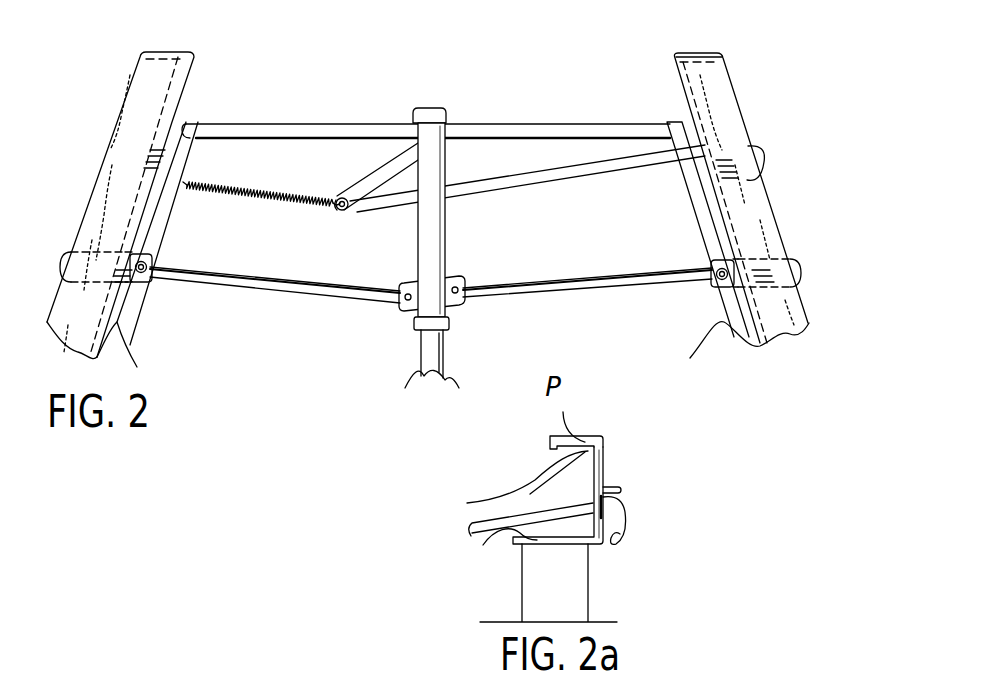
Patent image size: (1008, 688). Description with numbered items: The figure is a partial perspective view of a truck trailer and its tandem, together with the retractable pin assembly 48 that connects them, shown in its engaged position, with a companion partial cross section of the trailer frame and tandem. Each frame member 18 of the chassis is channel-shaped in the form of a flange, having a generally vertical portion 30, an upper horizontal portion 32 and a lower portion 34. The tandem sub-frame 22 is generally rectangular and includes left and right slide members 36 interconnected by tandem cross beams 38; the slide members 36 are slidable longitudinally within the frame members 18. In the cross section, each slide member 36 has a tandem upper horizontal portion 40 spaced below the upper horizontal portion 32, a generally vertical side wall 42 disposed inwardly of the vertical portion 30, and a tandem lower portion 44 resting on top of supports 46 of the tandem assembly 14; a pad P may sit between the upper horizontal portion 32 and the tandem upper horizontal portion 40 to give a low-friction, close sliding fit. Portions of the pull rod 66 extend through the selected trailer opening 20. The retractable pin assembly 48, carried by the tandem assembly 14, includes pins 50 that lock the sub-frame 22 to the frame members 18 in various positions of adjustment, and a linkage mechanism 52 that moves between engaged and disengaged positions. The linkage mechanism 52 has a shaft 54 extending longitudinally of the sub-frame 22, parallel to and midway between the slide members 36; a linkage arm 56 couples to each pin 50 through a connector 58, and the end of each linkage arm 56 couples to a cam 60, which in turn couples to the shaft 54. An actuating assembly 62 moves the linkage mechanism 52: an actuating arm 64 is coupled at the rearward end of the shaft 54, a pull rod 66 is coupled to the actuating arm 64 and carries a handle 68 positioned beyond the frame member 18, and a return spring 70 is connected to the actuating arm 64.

In FIG. 2, the tandem assembly 14 is at (211, 298).
In FIG. 2, the frame member 18 is at (673, 82).
In FIG. 2a, the frame member 18 is at (625, 471).
In FIG. 2, the trailer opening 20 is at (735, 88).
In FIG. 2, the tandem sub-frame 22 is at (746, 58).
In FIG. 2a, the vertical portion 30 is at (604, 469).
In FIG. 2a, the upper horizontal portion 32 is at (594, 441).
In FIG. 2a, the lower portion 34 is at (621, 490).
In FIG. 2, the slide member 36 is at (702, 68).
In FIG. 2a, the slide member 36 is at (501, 482).
In FIG. 2, the tandem cross beam 38 is at (513, 130).
In FIG. 2a, the tandem upper horizontal portion 40 is at (552, 453).
In FIG. 2a, the vertical side wall 42 is at (590, 492).
In FIG. 2a, the tandem lower portion 44 is at (518, 543).
In FIG. 2a, the support 46 is at (525, 597).
In FIG. 2, the retractable pin assembly 48 is at (348, 308).
In FIG. 2, the pin 50 is at (62, 267).
In FIG. 2, the linkage mechanism 52 is at (514, 270).
In FIG. 2, the shaft 54 is at (433, 226).
In FIG. 2, the linkage arm 56 is at (597, 287).
In FIG. 2, the connector 58 is at (712, 287).
In FIG. 2, the cam 60 is at (451, 282).
In FIG. 2, the actuating assembly 62 is at (368, 170).
In FIG. 2, the actuating arm 64 is at (347, 213).
In FIG. 2, the pull rod 66 is at (610, 168).
In FIG. 2, the handle 68 is at (764, 152).
In FIG. 2a, the handle 68 is at (615, 545).
In FIG. 2, the return spring 70 is at (252, 208).